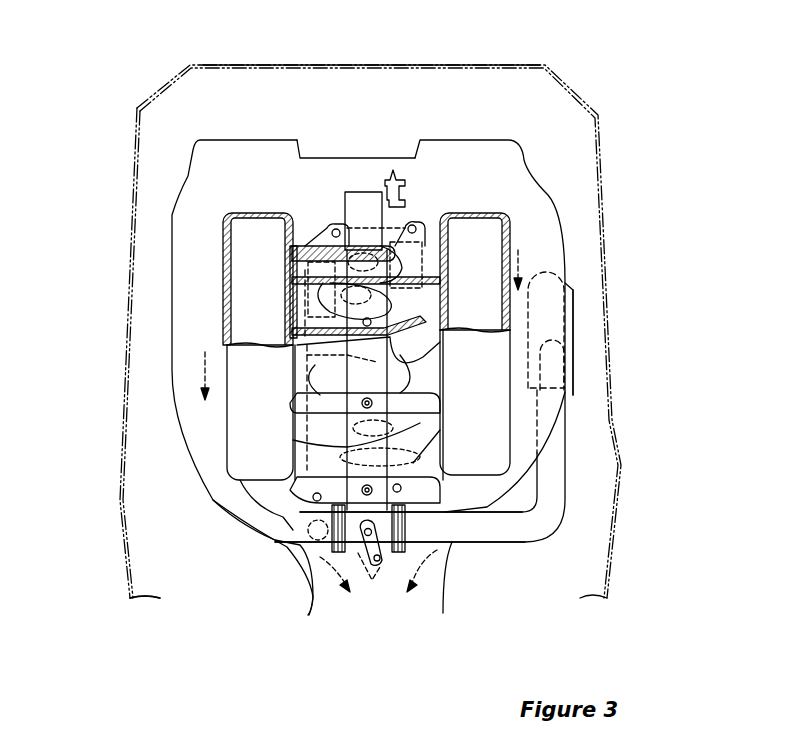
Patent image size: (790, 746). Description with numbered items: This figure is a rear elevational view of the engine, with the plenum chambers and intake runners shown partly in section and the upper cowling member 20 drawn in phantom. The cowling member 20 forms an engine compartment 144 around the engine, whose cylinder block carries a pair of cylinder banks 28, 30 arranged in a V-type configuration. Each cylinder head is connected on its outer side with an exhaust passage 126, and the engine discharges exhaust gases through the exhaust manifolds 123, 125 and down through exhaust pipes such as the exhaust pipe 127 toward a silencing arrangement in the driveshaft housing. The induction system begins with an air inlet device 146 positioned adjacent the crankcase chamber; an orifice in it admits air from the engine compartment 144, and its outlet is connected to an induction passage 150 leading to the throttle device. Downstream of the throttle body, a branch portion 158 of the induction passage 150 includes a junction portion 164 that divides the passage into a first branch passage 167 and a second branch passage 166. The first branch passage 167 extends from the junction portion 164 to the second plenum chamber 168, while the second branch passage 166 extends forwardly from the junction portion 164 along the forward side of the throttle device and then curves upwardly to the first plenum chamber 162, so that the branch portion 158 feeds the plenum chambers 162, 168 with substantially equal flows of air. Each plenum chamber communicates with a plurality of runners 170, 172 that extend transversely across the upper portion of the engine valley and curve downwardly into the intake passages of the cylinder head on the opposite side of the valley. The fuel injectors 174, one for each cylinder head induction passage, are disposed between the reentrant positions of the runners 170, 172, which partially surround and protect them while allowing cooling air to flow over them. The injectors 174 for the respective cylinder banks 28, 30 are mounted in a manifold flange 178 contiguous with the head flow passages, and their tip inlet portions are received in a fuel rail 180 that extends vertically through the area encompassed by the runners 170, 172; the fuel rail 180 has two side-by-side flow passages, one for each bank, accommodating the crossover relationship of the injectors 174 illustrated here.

The cowling member 20 is at (602, 148).
The cylinder bank 28 is at (243, 132).
The cylinder bank 30 is at (478, 130).
The exhaust manifold 123 is at (188, 398).
The exhaust manifold 125 is at (555, 252).
The exhaust passage 126 is at (330, 590).
The exhaust pipe 127 is at (432, 587).
The engine compartment 144 is at (510, 80).
The air inlet device 146 is at (575, 348).
The induction passage 150 is at (557, 480).
The branch portion 158 is at (178, 605).
The first plenum chamber 162 is at (247, 277).
The junction portion 164 is at (300, 543).
The second branch passage 166 is at (463, 498).
The first branch passage 167 is at (268, 532).
The second plenum chamber 168 is at (483, 238).
The intake runner 170 is at (303, 245).
The intake runner 172 is at (428, 240).
The fuel injector 174 is at (310, 263).
The manifold flange 178 is at (395, 240).
The fuel rail 180 is at (375, 190).